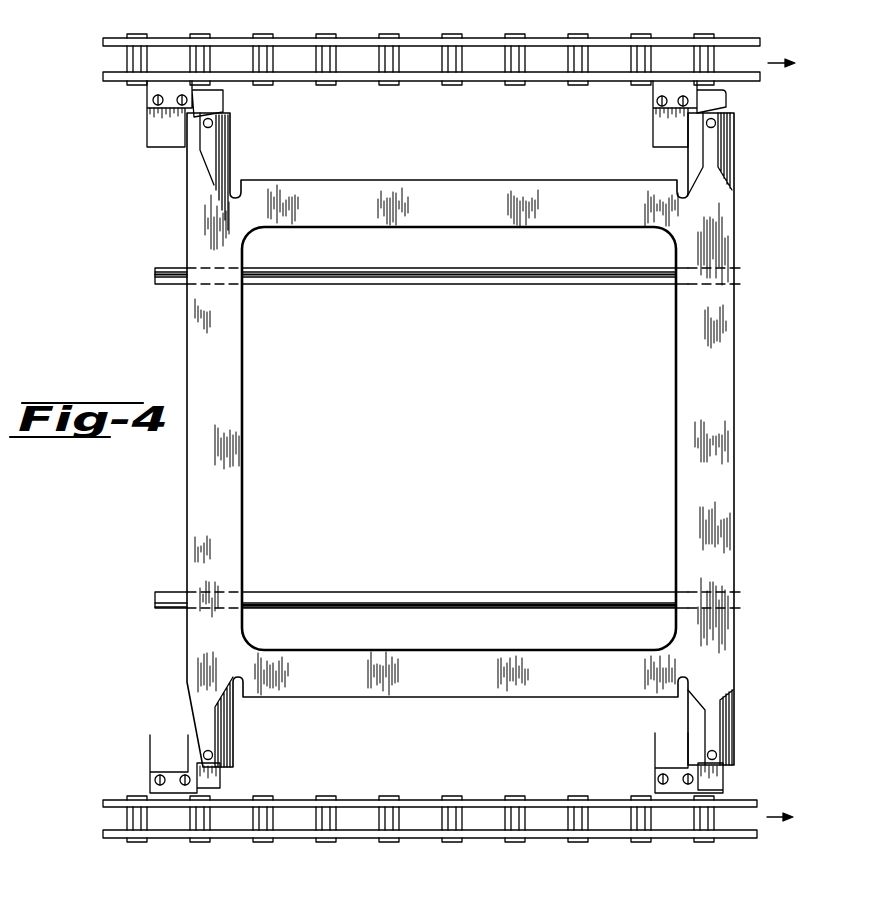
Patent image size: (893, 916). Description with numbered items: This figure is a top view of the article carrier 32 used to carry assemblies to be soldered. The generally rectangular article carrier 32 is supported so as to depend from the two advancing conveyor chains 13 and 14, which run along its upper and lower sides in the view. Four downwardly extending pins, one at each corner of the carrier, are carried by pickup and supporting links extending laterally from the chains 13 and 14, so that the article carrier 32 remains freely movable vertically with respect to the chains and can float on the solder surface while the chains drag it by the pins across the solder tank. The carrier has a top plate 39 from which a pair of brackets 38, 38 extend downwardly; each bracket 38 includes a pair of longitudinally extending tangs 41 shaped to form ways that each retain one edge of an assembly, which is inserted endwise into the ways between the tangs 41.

The conveyor chain 13 is at (487, 796).
The conveyor chain 14 is at (546, 84).
The article carrier 32 is at (751, 421).
The bracket 38 is at (551, 270).
The top plate 39 is at (240, 450).
The tang 41 is at (422, 280).